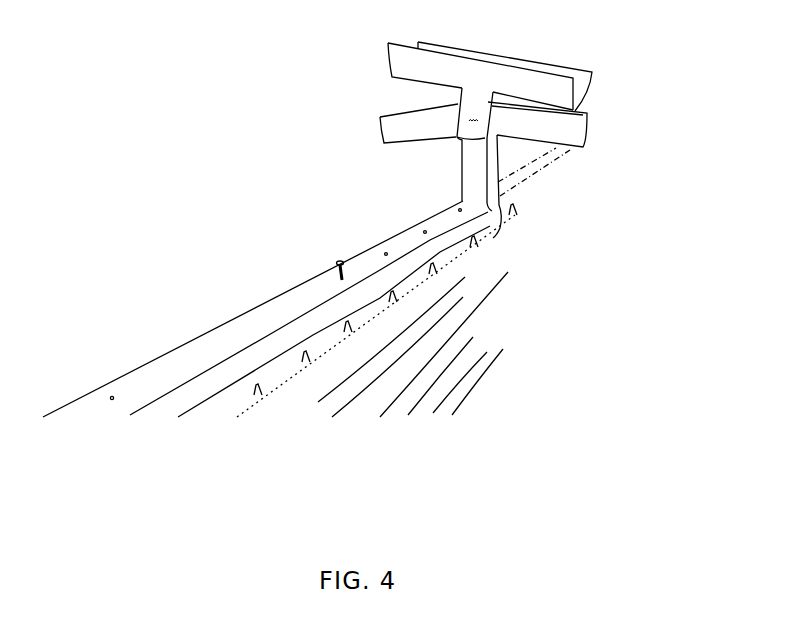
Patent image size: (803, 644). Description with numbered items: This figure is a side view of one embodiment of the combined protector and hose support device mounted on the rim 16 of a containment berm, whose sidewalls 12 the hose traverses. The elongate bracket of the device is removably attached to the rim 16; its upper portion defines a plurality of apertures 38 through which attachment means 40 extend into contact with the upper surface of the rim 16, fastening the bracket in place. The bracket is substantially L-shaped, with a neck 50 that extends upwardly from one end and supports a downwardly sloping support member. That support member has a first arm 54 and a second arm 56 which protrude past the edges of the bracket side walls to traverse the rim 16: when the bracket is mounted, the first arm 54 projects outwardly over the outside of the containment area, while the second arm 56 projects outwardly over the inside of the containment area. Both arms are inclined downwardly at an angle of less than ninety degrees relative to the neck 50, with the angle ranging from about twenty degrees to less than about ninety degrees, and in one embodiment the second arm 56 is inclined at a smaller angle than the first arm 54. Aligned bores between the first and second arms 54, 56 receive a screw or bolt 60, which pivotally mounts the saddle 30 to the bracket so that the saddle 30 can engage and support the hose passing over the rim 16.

The sidewalls 12 is at (377, 310).
The rim 16 is at (522, 183).
The saddle 30 is at (407, 58).
The apertures 38 is at (293, 303).
The attachment means 40 is at (337, 262).
The neck 50 is at (473, 175).
The first arm 54 is at (575, 130).
The second arm 56 is at (397, 129).
The screw or bolt 60 is at (468, 122).